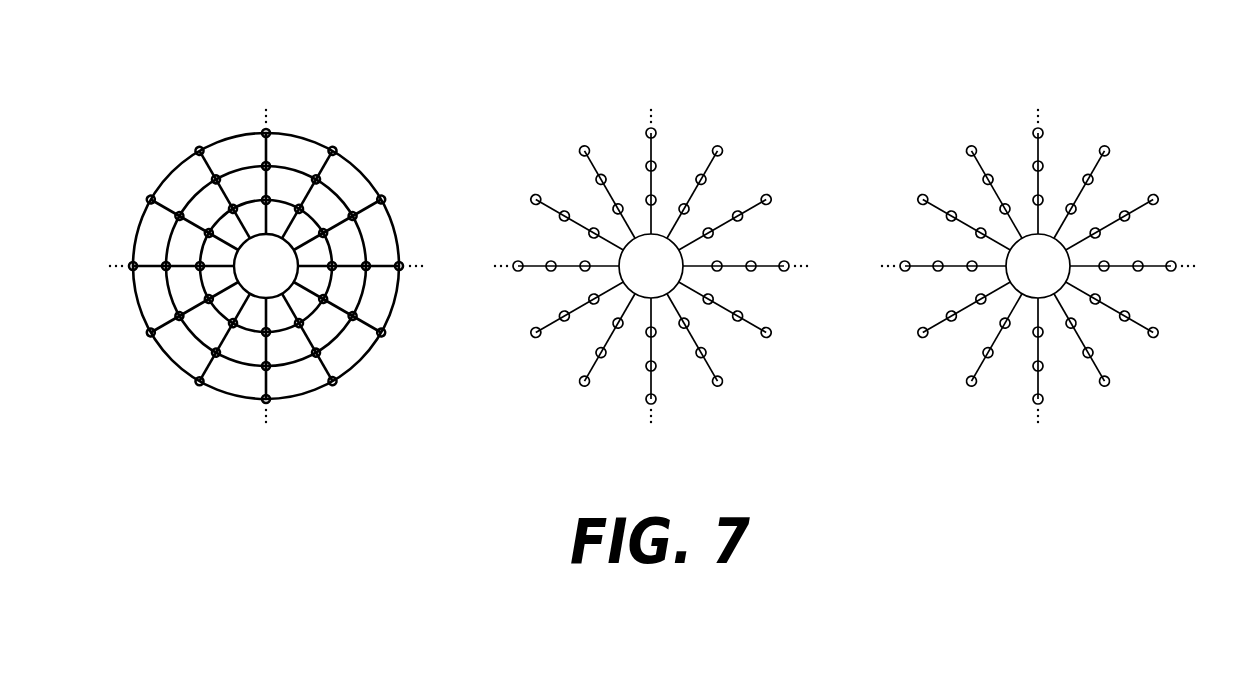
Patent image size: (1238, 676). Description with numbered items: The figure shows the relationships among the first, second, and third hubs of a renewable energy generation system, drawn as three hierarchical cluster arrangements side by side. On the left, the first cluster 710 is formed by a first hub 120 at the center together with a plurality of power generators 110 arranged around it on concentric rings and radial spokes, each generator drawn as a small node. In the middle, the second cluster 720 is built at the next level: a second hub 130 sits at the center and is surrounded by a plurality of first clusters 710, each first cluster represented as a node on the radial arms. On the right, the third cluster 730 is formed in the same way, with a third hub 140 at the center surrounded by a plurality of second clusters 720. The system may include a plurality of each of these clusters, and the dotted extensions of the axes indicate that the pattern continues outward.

The first cluster 710 is at (184, 124).
The second cluster 720 is at (583, 128).
The third cluster 730 is at (970, 128).
The power generator 110 is at (198, 386).
The first hub 120 is at (272, 297).
The second hub 130 is at (655, 298).
The third hub 140 is at (1042, 298).